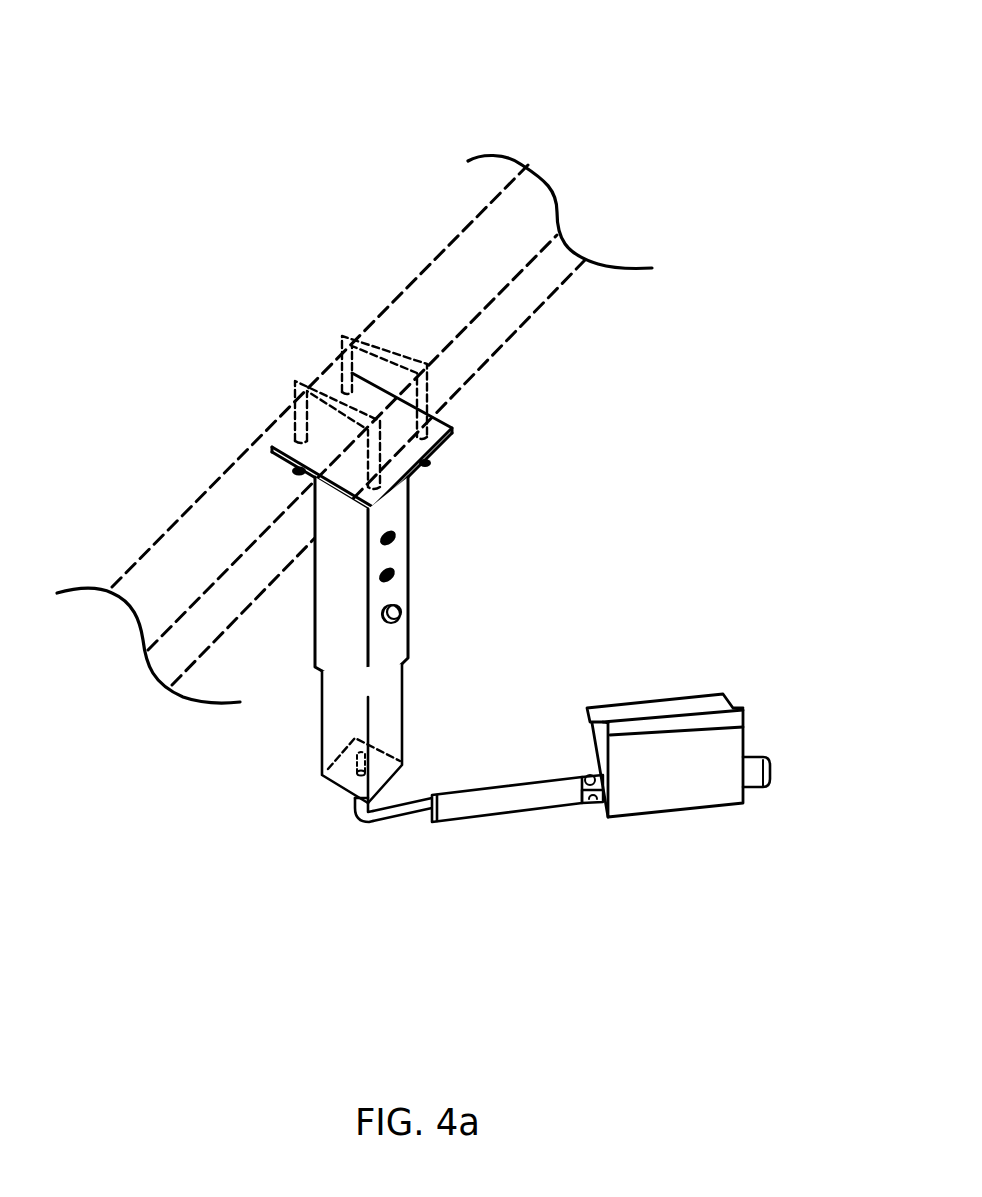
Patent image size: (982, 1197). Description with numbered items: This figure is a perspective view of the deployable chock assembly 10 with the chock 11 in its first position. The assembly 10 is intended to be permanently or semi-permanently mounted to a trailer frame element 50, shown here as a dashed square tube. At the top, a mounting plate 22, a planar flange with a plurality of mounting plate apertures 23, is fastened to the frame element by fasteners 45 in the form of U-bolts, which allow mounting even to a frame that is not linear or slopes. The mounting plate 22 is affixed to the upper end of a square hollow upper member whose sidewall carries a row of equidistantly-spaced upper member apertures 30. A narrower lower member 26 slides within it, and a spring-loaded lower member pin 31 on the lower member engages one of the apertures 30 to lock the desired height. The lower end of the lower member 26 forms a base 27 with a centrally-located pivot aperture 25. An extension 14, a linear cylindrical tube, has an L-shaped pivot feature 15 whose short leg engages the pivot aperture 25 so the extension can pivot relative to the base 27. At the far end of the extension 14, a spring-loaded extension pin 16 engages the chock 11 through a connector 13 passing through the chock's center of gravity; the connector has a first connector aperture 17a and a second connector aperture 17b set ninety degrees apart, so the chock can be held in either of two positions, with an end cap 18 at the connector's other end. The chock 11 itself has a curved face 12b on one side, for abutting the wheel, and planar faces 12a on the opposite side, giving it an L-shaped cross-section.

The deployable chock assembly 10 is at (553, 108).
The trailer frame element 50 is at (495, 245).
The fastener 45 is at (350, 330).
The mounting plate 22 is at (332, 382).
The mounting plate aperture 23 is at (334, 383).
The upper member aperture 30 is at (393, 603).
The lower member pin 31 is at (403, 614).
The lower member 26 is at (403, 720).
The base 27 is at (343, 767).
The pivot aperture 25 is at (357, 773).
The pivot feature 15 is at (408, 818).
The extension 14 is at (480, 820).
The chock 11 is at (628, 678).
The first connector aperture 17a is at (583, 780).
The second connector aperture 17b is at (587, 803).
The extension pin 16 is at (588, 777).
The connector 13 is at (595, 805).
The planar face 12a is at (685, 775).
The curved face 12b is at (700, 695).
The end cap 18 is at (765, 758).